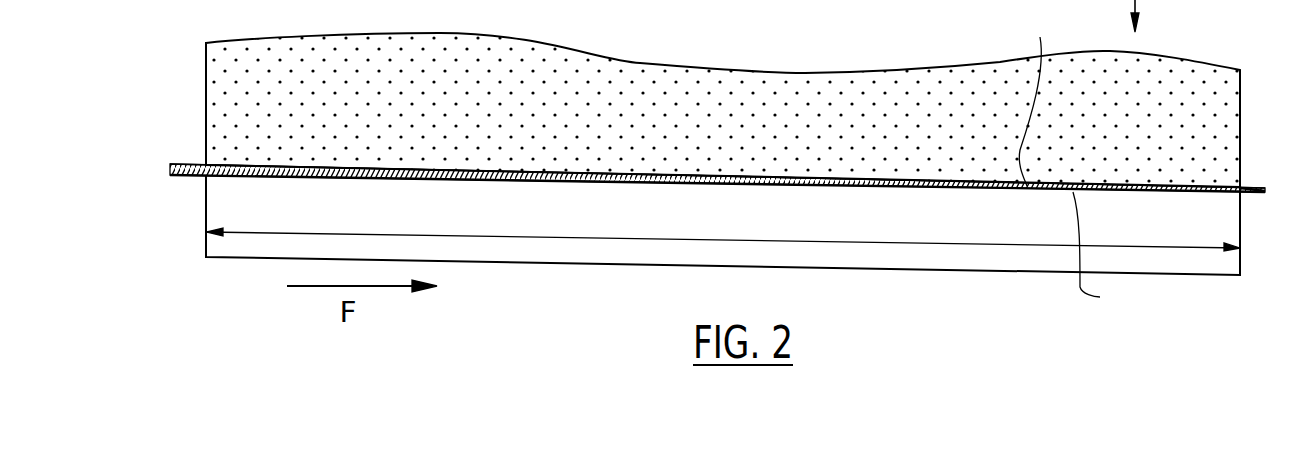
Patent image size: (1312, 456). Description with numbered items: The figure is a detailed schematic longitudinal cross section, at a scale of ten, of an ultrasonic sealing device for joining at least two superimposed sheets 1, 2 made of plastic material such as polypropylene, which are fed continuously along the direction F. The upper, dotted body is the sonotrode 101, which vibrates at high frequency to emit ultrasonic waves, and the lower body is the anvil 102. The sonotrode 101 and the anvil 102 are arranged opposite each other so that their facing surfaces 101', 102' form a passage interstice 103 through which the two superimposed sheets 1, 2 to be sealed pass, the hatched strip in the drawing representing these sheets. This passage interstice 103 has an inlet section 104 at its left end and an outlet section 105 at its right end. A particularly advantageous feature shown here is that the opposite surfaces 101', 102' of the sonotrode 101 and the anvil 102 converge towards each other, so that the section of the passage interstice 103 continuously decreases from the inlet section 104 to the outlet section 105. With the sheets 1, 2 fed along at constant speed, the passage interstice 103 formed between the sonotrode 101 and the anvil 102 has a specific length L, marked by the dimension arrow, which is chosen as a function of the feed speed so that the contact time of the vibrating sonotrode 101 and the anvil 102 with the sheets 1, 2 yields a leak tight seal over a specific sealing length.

The superimposed sheet 1 is at (180, 176).
The superimposed sheet 2 is at (179, 163).
The sonotrode 101 is at (723, 99).
The facing surface of the sonotrode 101' is at (1037, 93).
The anvil 102 is at (723, 201).
The facing surface of the anvil 102' is at (1115, 256).
The passage interstice 103 is at (833, 190).
The inlet section 104 is at (204, 176).
The outlet section 105 is at (1262, 193).